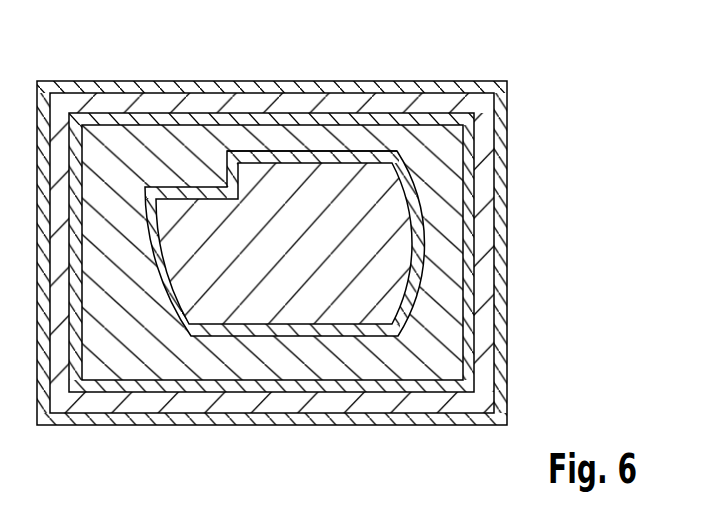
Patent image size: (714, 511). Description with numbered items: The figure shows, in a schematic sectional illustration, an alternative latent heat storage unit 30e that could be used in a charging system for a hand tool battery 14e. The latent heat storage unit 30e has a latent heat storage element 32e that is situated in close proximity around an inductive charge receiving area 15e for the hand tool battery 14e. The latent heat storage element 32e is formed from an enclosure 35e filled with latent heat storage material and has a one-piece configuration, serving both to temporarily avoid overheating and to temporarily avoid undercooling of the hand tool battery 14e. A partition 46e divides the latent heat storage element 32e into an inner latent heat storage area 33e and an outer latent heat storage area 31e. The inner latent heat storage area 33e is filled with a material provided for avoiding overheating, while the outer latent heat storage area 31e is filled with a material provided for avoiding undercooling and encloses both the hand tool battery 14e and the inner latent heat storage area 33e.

The latent heat storage unit 30e is at (323, 218).
The latent heat storage element 32e is at (500, 127).
The outer latent heat storage area 31e is at (482, 182).
The partition 46e is at (343, 118).
The inner latent heat storage area 33e is at (447, 227).
The enclosure 35e is at (500, 288).
The hand tool battery 14e is at (387, 272).
The inductive charge receiving area 15e is at (296, 157).